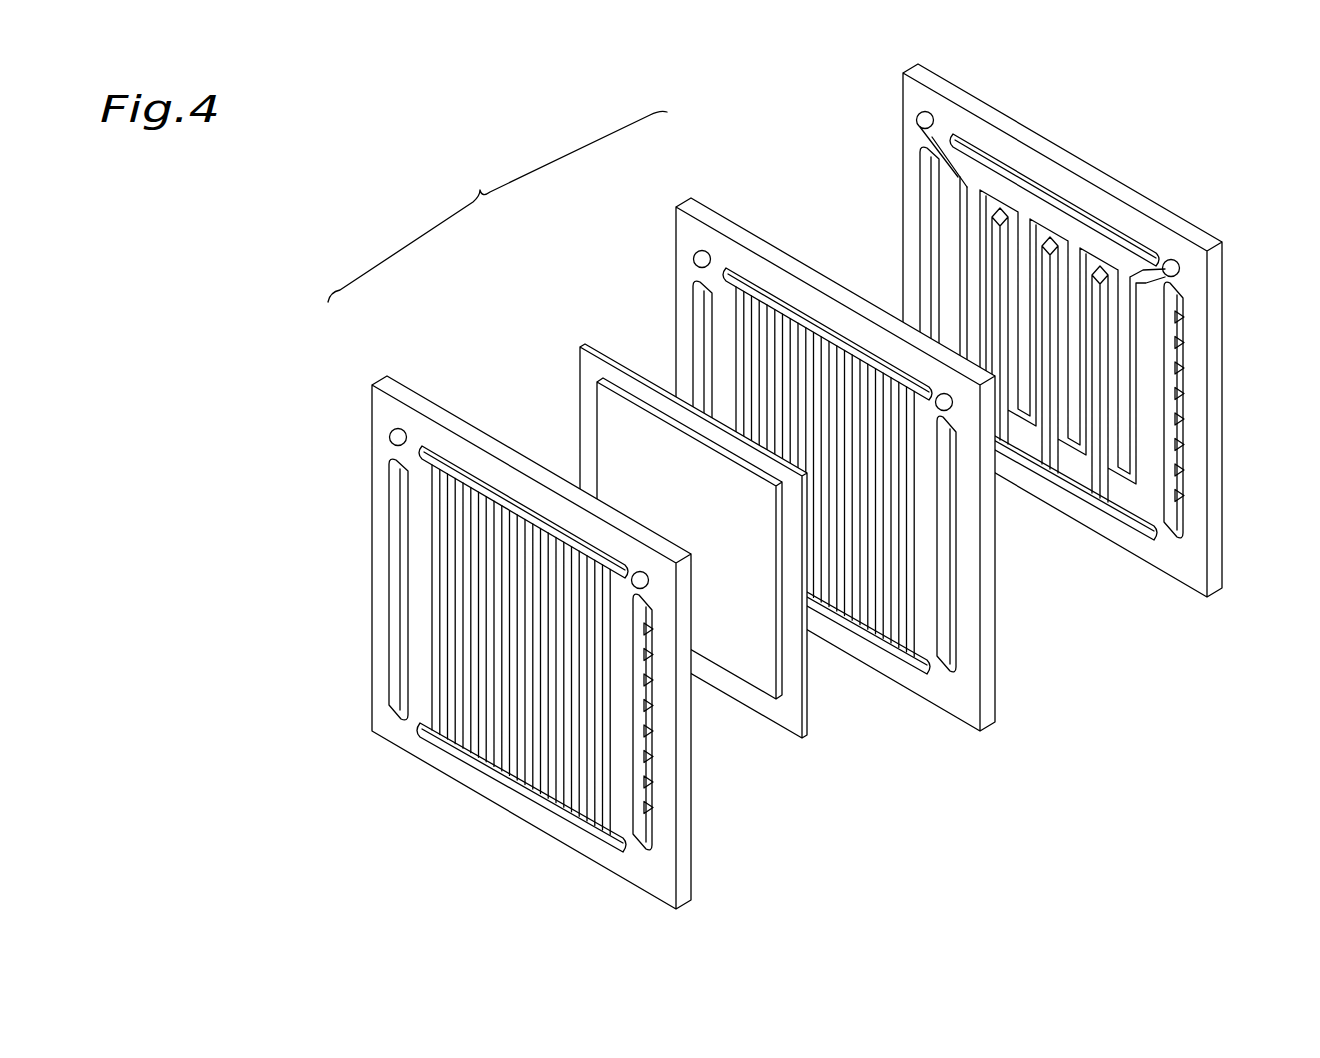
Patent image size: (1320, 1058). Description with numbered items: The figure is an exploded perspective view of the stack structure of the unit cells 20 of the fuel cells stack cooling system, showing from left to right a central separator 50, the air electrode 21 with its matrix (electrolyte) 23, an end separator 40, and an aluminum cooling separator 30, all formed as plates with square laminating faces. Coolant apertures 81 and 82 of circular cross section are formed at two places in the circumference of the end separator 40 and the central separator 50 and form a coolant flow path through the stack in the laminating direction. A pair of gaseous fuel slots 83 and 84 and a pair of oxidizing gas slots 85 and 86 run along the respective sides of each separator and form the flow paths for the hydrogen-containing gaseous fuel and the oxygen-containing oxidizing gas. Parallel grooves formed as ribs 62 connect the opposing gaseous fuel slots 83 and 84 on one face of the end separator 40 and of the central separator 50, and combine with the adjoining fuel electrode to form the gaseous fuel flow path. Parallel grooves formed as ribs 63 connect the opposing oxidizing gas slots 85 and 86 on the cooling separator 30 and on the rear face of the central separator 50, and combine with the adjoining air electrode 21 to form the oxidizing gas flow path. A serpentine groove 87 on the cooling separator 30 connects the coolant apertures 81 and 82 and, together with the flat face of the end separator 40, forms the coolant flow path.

The unit cell 20 is at (497, 206).
The air electrode 21 is at (607, 415).
The matrix (electrolyte) 23 is at (600, 348).
The cooling separator 30 is at (935, 86).
The end separator 40 is at (678, 205).
The central separator 50 is at (374, 384).
The ribs 62 is at (512, 758).
The ribs 63 is at (650, 680).
The coolant aperture 81 is at (390, 438).
The coolant aperture 82 is at (647, 593).
The gaseous fuel slot 83 is at (463, 470).
The gaseous fuel slot 84 is at (542, 812).
The oxidizing gas slot 85 is at (396, 583).
The oxidizing gas slot 86 is at (637, 800).
The serpentine groove 87 is at (1042, 233).